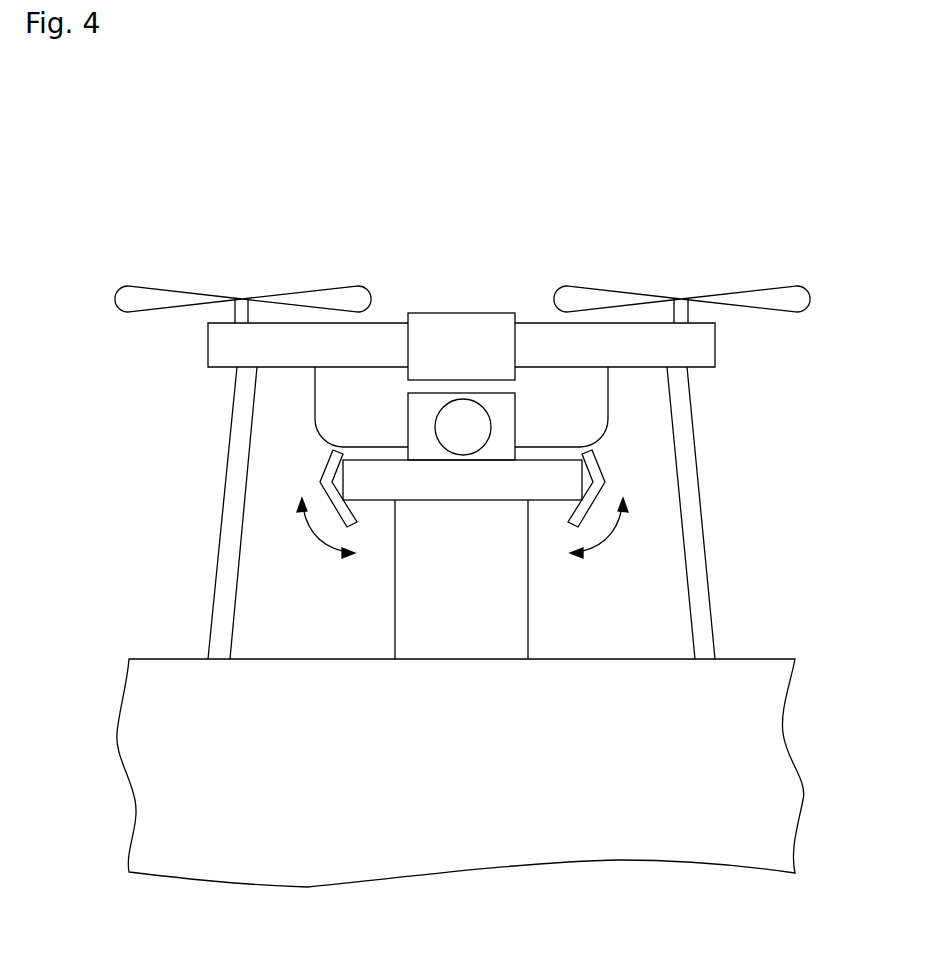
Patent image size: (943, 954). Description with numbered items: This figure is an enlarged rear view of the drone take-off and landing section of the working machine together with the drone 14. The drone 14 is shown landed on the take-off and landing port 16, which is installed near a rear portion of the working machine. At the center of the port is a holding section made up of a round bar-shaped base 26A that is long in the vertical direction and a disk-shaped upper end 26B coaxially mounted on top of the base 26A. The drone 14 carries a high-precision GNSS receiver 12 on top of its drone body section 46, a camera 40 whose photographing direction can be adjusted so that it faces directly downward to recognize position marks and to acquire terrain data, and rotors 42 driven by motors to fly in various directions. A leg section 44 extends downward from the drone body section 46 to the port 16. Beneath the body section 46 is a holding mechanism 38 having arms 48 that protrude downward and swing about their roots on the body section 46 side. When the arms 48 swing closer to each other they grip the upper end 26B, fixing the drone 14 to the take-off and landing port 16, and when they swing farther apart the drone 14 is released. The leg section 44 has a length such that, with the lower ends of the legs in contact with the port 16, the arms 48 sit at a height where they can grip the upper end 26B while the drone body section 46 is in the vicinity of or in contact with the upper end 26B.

The high-precision GNSS receiver 12 is at (450, 312).
The drone 14 is at (178, 347).
The take-off and landing port 16 is at (478, 220).
The base 26A is at (395, 590).
The upper end 26B is at (332, 478).
The holding mechanism 38 is at (633, 477).
The camera 40 is at (492, 427).
The rotor 42 is at (763, 288).
The leg section 44 is at (707, 547).
The drone body section 46 is at (608, 408).
The arm 48 is at (597, 470).